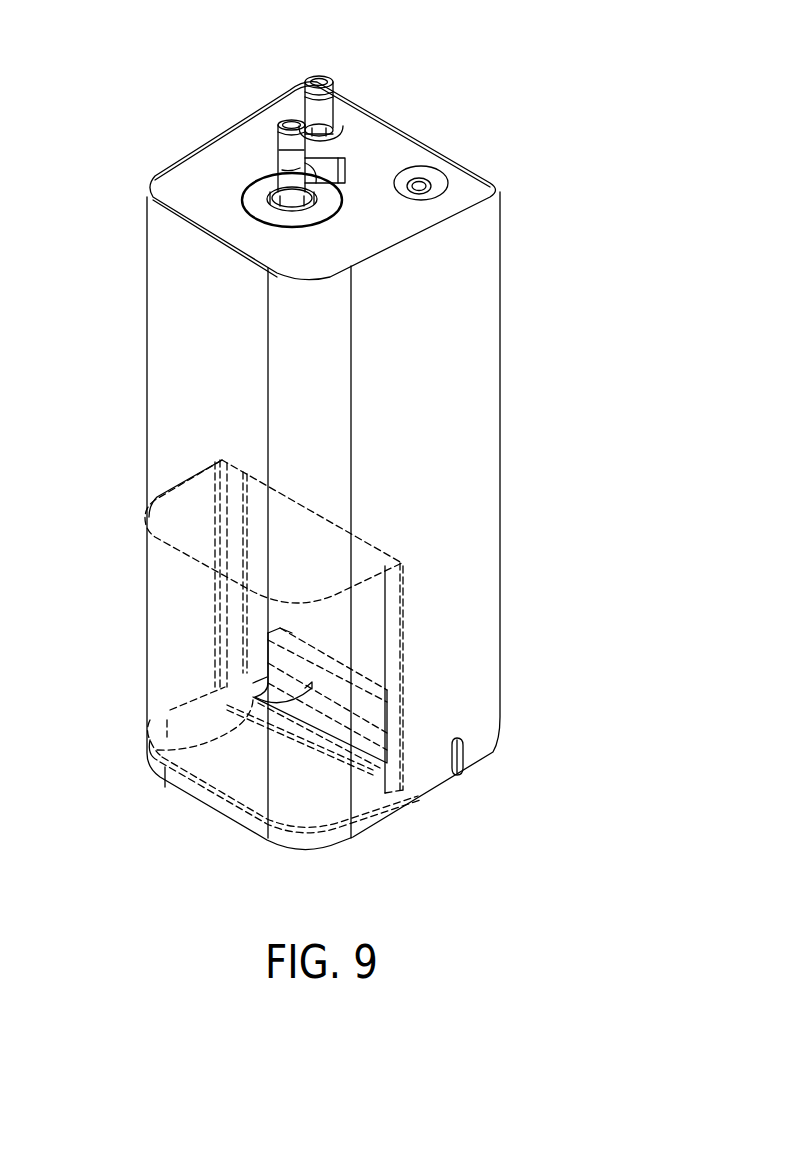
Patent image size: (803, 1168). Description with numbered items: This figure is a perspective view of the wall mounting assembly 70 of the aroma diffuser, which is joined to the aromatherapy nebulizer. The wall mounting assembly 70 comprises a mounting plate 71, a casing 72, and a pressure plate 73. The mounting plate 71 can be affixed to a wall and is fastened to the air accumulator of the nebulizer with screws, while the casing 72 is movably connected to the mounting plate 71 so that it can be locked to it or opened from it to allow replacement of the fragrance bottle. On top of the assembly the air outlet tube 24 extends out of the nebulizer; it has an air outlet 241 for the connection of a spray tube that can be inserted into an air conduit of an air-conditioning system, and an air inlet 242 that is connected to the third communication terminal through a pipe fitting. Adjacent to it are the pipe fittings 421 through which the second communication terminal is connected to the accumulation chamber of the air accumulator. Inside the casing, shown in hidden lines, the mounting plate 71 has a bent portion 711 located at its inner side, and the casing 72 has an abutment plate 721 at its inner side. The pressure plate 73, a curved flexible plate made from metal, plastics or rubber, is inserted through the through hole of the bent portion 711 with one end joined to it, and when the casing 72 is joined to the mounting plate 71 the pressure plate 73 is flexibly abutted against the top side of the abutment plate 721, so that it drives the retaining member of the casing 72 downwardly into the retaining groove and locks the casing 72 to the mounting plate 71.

The air outlet tube 24 is at (287, 170).
The air outlet 241 is at (287, 118).
The air inlet 242 is at (347, 165).
The pipe fittings 421 is at (328, 108).
The wall mounting assembly 70 is at (655, 173).
The mounting plate 71 is at (460, 190).
The casing 72 is at (490, 338).
The bent portion 711 is at (360, 681).
The abutment plate 721 is at (157, 757).
The pressure plate 73 is at (313, 720).